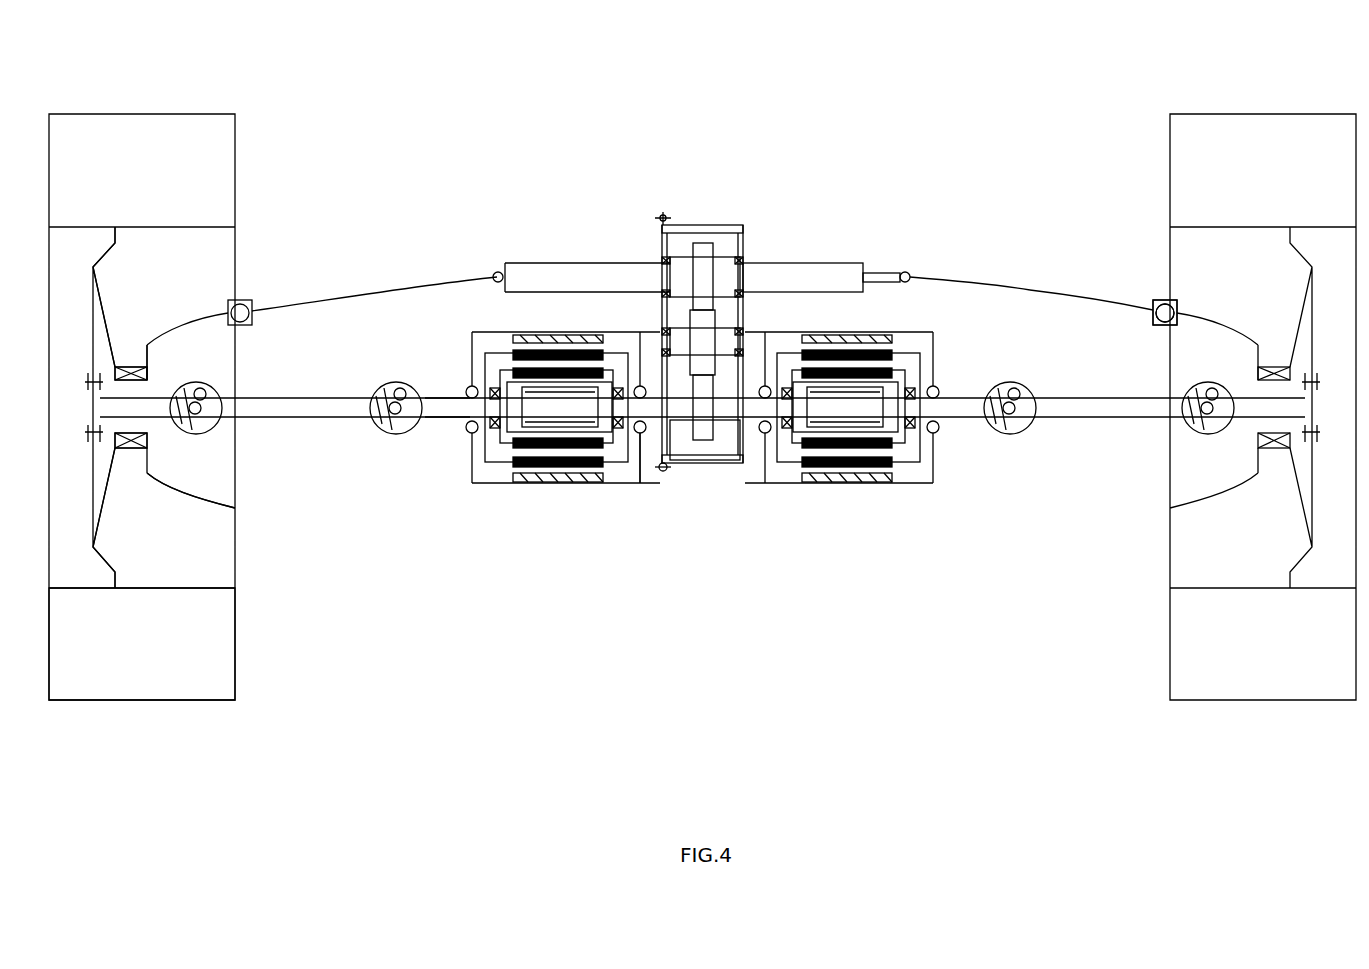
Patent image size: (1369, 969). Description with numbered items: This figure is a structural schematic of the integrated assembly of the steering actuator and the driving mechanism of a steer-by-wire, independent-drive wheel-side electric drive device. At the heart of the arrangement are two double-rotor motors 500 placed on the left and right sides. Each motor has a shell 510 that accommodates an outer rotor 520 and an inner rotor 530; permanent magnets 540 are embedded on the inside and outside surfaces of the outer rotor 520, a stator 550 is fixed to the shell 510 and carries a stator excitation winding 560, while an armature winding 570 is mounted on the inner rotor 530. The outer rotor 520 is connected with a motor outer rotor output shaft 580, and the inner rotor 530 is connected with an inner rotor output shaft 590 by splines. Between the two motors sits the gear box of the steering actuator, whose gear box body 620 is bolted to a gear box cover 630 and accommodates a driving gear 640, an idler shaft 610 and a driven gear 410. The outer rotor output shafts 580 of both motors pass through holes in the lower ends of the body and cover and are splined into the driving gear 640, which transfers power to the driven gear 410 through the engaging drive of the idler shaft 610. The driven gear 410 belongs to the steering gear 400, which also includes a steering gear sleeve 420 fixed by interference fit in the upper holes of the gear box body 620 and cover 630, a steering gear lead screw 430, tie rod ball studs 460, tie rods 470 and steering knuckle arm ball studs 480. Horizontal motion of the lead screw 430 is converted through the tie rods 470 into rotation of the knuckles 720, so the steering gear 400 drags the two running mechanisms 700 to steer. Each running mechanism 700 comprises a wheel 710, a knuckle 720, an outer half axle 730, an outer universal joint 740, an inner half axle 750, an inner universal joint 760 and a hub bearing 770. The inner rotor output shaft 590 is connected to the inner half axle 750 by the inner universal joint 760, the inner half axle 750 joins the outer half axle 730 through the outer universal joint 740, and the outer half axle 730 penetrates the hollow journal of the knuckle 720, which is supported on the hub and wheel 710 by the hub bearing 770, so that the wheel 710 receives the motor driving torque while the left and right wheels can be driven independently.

The steering gear 400 is at (1090, 300).
The driven gear 410 is at (727, 263).
The steering gear sleeve 420 is at (777, 273).
The steering gear lead screw 430 is at (880, 273).
The tie rod ball studs 460 is at (903, 275).
The tie rods 470 is at (965, 284).
The steering knuckle arm ball studs 480 is at (1165, 308).
The double-rotor motor 500 is at (765, 485).
The shell 510 is at (642, 483).
The outer rotor 520 is at (573, 362).
The inner rotor 530 is at (523, 368).
The permanent magnets 540 is at (473, 408).
The stator 550 is at (308, 300).
The stator excitation winding 560 is at (622, 486).
The armature winding 570 is at (580, 482).
The motor outer rotor output shaft 580 is at (662, 405).
The inner rotor output shaft 590 is at (489, 428).
The idler shaft 610 is at (707, 323).
The gear box body 620 is at (683, 225).
The gear box cover 630 is at (660, 214).
The driving gear 640 is at (703, 427).
The running mechanism 700 is at (337, 397).
The wheel 710 is at (140, 650).
The knuckle 720 is at (148, 410).
The outer half axle 730 is at (172, 488).
The outer universal joint 740 is at (212, 422).
The inner half axle 750 is at (272, 410).
The inner universal joint 760 is at (405, 425).
The hub bearing 770 is at (128, 448).